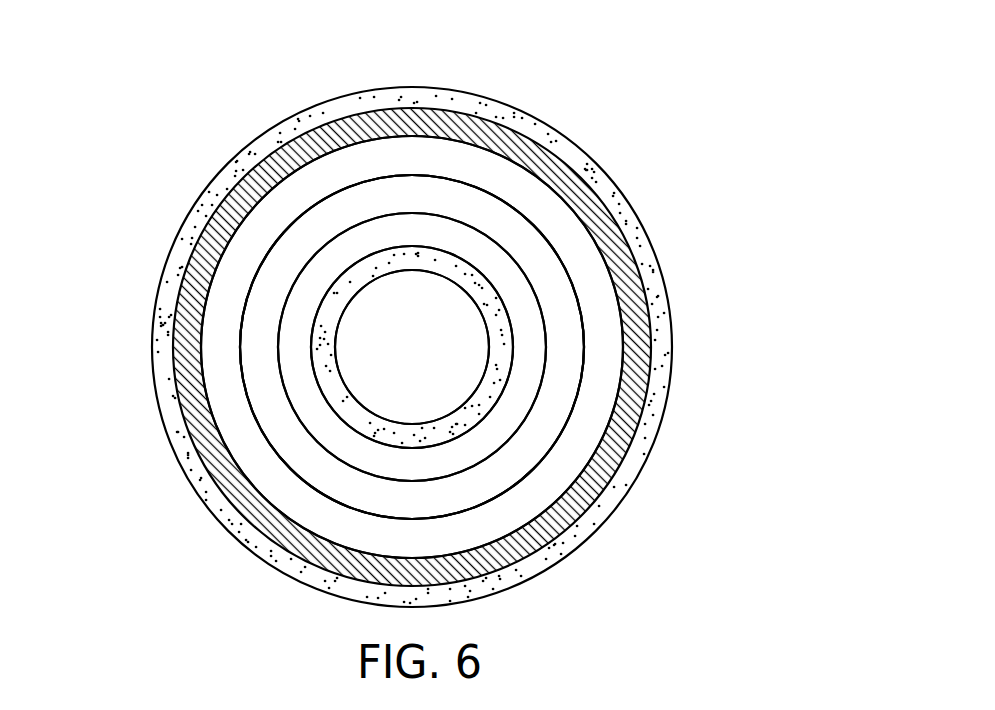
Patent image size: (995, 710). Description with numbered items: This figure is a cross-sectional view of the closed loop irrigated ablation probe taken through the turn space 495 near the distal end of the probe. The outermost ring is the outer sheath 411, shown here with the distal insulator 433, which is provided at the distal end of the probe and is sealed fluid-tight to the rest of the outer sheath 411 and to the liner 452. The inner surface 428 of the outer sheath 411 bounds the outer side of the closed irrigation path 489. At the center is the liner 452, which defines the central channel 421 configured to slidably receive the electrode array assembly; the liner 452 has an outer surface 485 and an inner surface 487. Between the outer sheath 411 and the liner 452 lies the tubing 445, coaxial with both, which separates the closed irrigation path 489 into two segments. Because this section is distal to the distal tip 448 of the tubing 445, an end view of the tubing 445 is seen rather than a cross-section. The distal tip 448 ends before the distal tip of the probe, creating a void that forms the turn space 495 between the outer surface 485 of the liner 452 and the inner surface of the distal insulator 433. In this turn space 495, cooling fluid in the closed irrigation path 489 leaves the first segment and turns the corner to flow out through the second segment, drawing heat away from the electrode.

The distal insulator 433 is at (547, 137).
The outer sheath 411 is at (580, 197).
The inner surface of outer sheath 428 is at (378, 144).
The tubing 445 is at (543, 285).
The closed irrigation path 489 is at (547, 472).
The distal tip of tubing 448 is at (267, 412).
The turn space 495 is at (267, 323).
The liner 452 is at (498, 354).
The outer surface of liner 485 is at (513, 375).
The central channel 421 is at (413, 383).
The inner surface of liner 487 is at (386, 282).